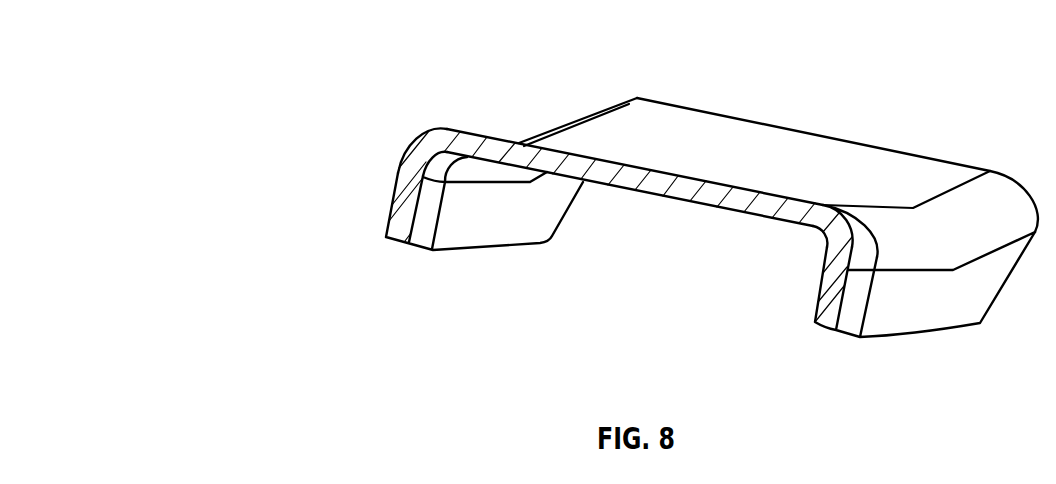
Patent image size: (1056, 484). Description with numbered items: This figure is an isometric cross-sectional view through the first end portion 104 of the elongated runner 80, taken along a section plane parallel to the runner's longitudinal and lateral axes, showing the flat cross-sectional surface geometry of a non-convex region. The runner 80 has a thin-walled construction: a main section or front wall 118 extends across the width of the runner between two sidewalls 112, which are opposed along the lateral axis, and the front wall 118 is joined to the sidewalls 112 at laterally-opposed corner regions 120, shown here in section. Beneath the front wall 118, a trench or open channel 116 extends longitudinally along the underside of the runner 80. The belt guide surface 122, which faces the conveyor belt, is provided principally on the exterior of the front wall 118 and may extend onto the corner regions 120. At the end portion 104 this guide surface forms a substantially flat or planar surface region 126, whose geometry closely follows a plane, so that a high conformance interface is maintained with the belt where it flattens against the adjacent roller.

The elongated runner 80 is at (224, 138).
The first end portion 104 is at (698, 118).
The sidewalls 112 is at (483, 245).
The open channel 116 is at (734, 264).
The front wall 118 is at (648, 178).
The corner regions 120 is at (435, 150).
The belt guide surface 122 is at (763, 168).
The flat surface region 126 is at (580, 145).